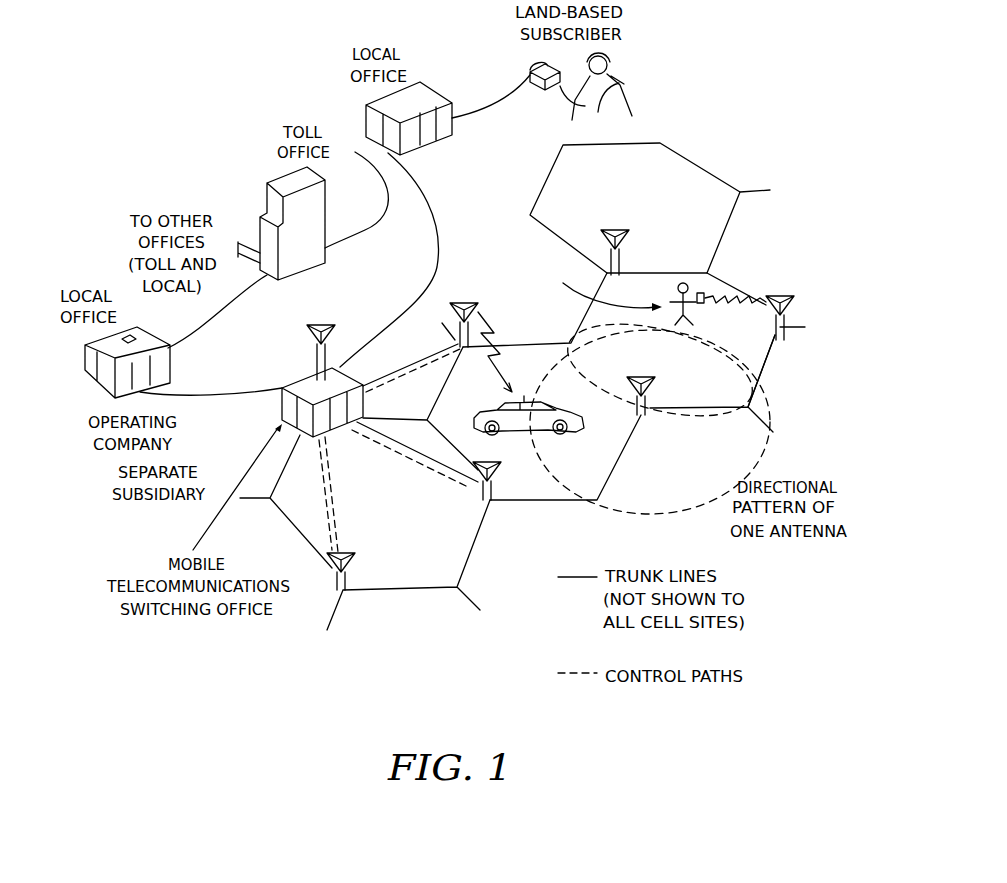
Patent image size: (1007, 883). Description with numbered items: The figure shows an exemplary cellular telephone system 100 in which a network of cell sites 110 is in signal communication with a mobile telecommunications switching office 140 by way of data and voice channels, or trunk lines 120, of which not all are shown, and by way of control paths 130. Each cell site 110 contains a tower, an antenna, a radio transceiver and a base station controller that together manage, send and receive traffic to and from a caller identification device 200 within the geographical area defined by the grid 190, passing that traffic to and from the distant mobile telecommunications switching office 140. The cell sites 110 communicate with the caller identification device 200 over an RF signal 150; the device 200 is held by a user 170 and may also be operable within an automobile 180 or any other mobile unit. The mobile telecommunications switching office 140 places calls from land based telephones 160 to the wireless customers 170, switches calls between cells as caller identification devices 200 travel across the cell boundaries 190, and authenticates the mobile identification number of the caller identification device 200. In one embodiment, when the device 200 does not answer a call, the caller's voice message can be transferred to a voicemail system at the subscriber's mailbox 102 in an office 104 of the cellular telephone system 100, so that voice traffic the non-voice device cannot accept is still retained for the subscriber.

The cellular telephone system 100 is at (172, 132).
The subscriber's mailbox 102 is at (86, 347).
The office 104 is at (170, 363).
The cell site 110 is at (615, 228).
The trunk lines 120 is at (398, 417).
The control paths 130 is at (395, 450).
The mobile telecommunications switching office 140 is at (297, 388).
The RF signal 150 is at (748, 292).
The land based telephone 160 is at (530, 68).
The user 170 is at (603, 286).
The automobile 180 is at (527, 403).
The grid 190 is at (766, 363).
The caller identification device 200 is at (697, 291).